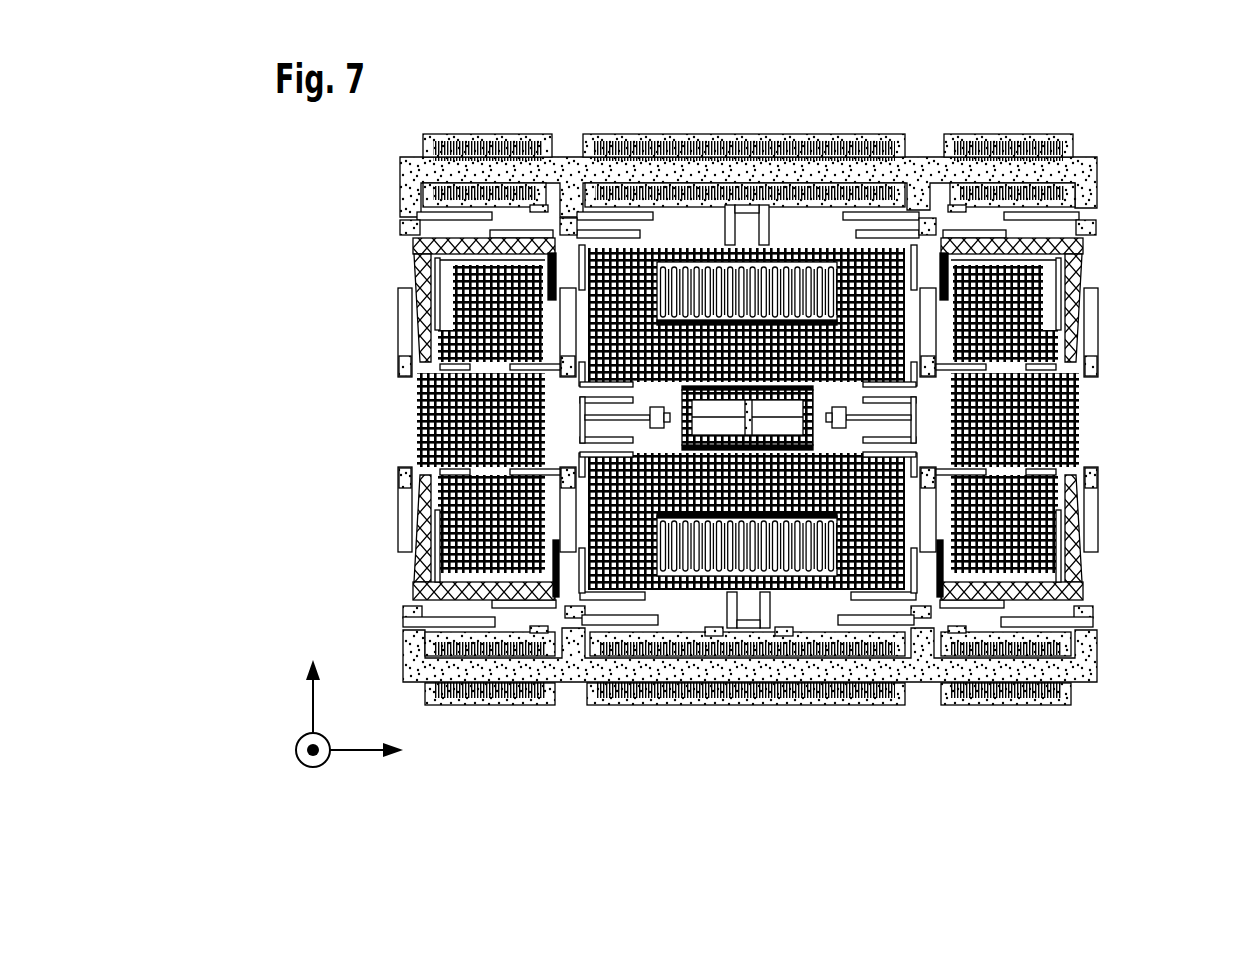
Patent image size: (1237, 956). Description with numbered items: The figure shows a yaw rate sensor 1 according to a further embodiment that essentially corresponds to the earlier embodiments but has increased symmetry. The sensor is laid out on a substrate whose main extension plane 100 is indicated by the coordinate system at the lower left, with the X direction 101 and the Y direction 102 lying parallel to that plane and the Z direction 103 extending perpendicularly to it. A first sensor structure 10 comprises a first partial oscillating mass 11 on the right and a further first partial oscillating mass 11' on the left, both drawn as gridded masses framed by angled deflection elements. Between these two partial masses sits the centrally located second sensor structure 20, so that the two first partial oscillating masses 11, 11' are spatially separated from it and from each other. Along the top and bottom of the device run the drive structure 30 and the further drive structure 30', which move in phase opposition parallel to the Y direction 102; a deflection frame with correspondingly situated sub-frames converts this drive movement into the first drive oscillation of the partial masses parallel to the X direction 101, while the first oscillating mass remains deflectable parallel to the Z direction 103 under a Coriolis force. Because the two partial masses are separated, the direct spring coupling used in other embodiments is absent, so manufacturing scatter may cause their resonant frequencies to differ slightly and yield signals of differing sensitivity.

The yaw rate sensor 1 is at (480, 114).
The first sensor structure 10 is at (345, 318).
The first partial oscillating mass 11 is at (1048, 419).
The further first partial oscillating mass 11' is at (453, 419).
The second sensor structure 20 is at (815, 612).
The drive structure 30 is at (788, 189).
The further drive structure 30' is at (799, 648).
The main extension plane 100 is at (380, 682).
The X direction 101 is at (358, 753).
The Y direction 102 is at (312, 706).
The Z direction 103 is at (297, 760).